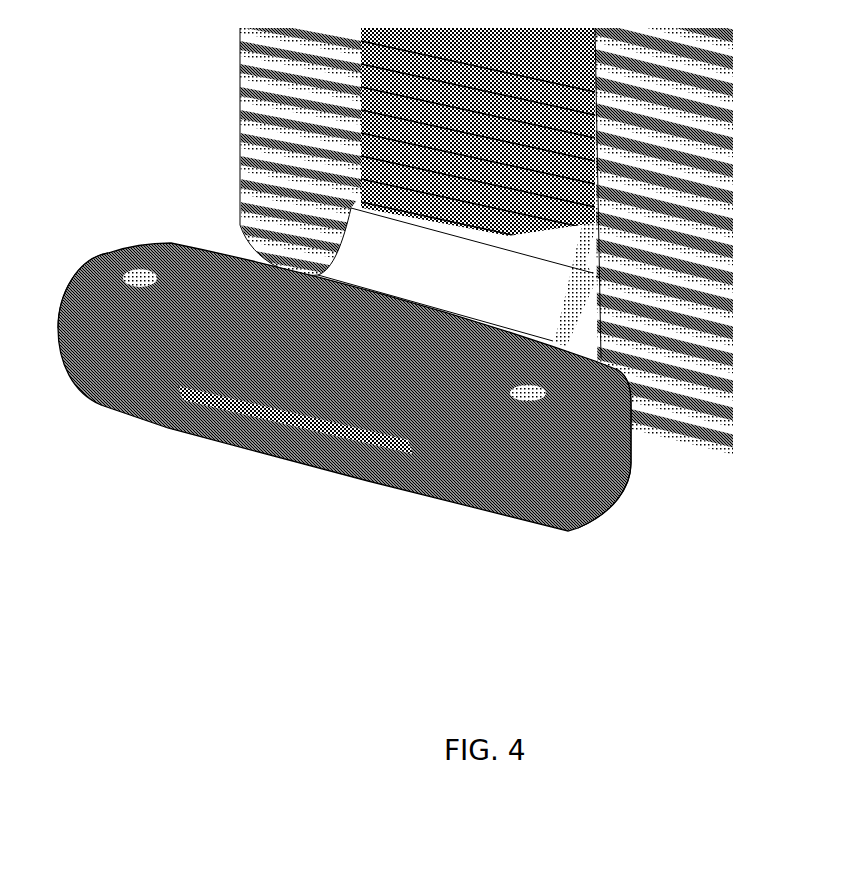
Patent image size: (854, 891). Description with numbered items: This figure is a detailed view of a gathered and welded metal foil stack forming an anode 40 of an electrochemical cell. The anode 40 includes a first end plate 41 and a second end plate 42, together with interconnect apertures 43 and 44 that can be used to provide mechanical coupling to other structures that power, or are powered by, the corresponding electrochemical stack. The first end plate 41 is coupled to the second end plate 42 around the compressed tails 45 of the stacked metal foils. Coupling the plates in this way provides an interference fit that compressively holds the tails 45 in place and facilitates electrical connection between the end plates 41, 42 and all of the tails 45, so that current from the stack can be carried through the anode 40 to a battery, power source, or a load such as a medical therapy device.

The anode 40 is at (140, 225).
The first end plate 41 is at (103, 252).
The second end plate 42 is at (525, 495).
The interconnect aperture 43 is at (145, 287).
The interconnect aperture 44 is at (530, 393).
The compressed tails 45 is at (307, 423).